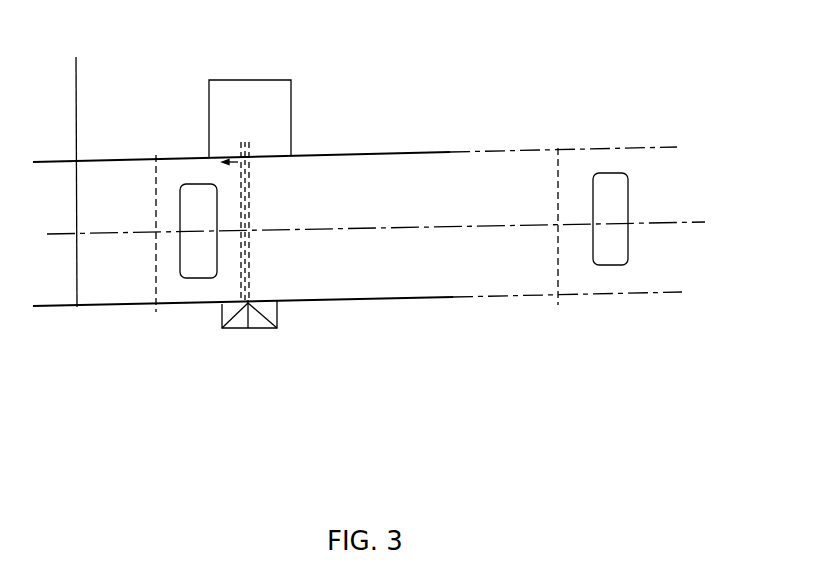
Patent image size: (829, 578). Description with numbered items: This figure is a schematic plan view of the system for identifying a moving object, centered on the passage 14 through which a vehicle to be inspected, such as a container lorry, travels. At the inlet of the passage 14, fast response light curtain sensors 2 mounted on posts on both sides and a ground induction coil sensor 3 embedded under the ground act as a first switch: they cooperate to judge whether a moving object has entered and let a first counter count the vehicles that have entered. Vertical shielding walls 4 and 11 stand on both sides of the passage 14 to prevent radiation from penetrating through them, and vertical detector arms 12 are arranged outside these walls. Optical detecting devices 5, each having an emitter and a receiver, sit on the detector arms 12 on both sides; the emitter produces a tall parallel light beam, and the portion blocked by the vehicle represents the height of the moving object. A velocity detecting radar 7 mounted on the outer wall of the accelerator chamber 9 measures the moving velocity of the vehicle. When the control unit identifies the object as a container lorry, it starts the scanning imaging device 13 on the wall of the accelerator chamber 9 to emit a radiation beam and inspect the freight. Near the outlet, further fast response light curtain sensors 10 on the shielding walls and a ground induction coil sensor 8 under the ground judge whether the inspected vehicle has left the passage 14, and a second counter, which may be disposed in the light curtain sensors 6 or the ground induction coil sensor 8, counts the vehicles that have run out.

The fast response light curtain sensors 2 is at (560, 305).
The ground induction coil sensor 3 is at (602, 267).
The vertical shielding wall 4 is at (432, 297).
The optical detecting devices 5 is at (247, 159).
The fast response light curtain sensors 6 is at (237, 159).
The velocity detecting radar 7 is at (234, 158).
The ground induction coil sensor 8 is at (200, 185).
The accelerator chamber 9 is at (218, 97).
The fast response light curtain sensors 10 is at (156, 157).
The vertical shielding wall 11 is at (102, 158).
The vertical detector arms 12 is at (254, 328).
The scanning imaging device 13 is at (245, 158).
The passage 14 is at (630, 168).